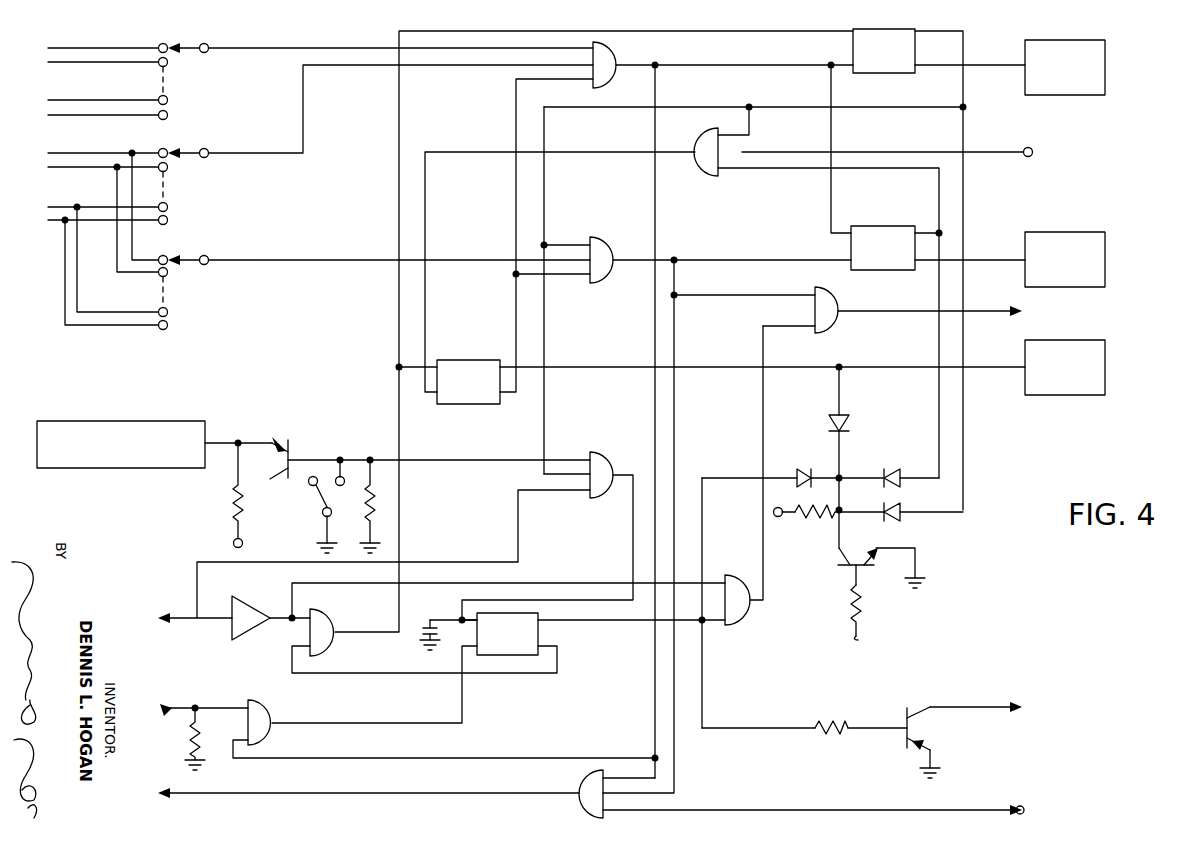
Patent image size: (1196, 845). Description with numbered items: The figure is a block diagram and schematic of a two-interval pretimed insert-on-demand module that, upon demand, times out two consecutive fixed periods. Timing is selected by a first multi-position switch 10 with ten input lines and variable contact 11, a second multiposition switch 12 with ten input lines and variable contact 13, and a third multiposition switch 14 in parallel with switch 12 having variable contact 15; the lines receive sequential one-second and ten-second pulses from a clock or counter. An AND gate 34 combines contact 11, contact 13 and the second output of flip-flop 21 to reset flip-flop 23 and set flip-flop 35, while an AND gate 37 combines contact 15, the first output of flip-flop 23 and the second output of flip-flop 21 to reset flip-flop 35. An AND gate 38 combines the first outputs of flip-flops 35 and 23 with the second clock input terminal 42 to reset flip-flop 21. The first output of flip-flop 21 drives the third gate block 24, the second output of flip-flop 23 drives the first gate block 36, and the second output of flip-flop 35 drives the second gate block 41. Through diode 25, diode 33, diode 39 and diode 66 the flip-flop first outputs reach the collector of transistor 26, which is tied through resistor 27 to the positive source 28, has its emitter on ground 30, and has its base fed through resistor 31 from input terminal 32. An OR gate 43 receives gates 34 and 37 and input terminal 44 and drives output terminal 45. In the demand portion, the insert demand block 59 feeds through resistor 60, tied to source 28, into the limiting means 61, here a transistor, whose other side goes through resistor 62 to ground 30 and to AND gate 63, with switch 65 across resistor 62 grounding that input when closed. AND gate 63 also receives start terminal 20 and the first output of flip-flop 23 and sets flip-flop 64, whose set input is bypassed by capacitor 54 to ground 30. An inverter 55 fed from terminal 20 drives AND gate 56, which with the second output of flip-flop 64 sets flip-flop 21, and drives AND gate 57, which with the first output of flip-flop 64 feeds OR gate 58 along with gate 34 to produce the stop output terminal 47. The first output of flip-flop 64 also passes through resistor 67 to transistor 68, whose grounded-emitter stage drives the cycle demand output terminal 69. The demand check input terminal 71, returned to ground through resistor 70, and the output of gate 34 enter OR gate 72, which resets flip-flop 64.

The first multi-position switch 10 is at (203, 91).
The variable contact 11 is at (201, 43).
The second multiposition switch 12 is at (203, 196).
The variable contact 13 is at (201, 148).
The third multiposition switch 14 is at (203, 301).
The variable contact 15 is at (201, 255).
The input terminal 20 is at (162, 615).
The flip-flop 21 is at (477, 390).
The flip-flop 23 is at (893, 59).
The block labeled GATE 3 24 is at (1083, 340).
The diode 25 is at (850, 421).
The transistor 26 is at (866, 551).
The resistor 27 is at (826, 517).
The source of positive energizing potential 28 is at (233, 542).
The common conductor or ground 30 is at (367, 538).
The resistor 31 is at (850, 604).
The input terminal 32 is at (860, 638).
The diode 33 is at (902, 508).
The AND gate 34 is at (612, 46).
The flip-flop 35 is at (892, 257).
The block labeled GATE 1 36 is at (1060, 40).
The AND gate 37 is at (613, 241).
The AND gate 38 is at (706, 134).
The diode 39 is at (894, 468).
The block labeled GATE 2 41 is at (1057, 232).
The input terminal 42 is at (1040, 142).
The OR gate 43 is at (581, 781).
The input terminal 44 is at (1021, 806).
The output terminal 45 is at (162, 797).
The output terminal 47 is at (1010, 308).
The capacitor 54 is at (427, 622).
The inverter 55 is at (248, 604).
The AND gate 56 is at (330, 608).
The AND gate 57 is at (744, 620).
The OR gate 58 is at (834, 292).
The block labeled INSERT DEMAND 59 is at (128, 421).
The resistor 60 is at (232, 492).
The limiting means 61 is at (290, 448).
The resistor 62 is at (359, 500).
The AND gate 63 is at (603, 455).
The flip-flop 64 is at (517, 642).
The switch 65 is at (316, 497).
The diode 66 is at (800, 468).
The resistor 67 is at (838, 721).
The transistor 68 is at (945, 737).
The cycle demand output terminal 69 is at (1018, 704).
The resistor 70 is at (190, 734).
The demand check input terminal 71 is at (162, 718).
The OR gate 72 is at (270, 708).